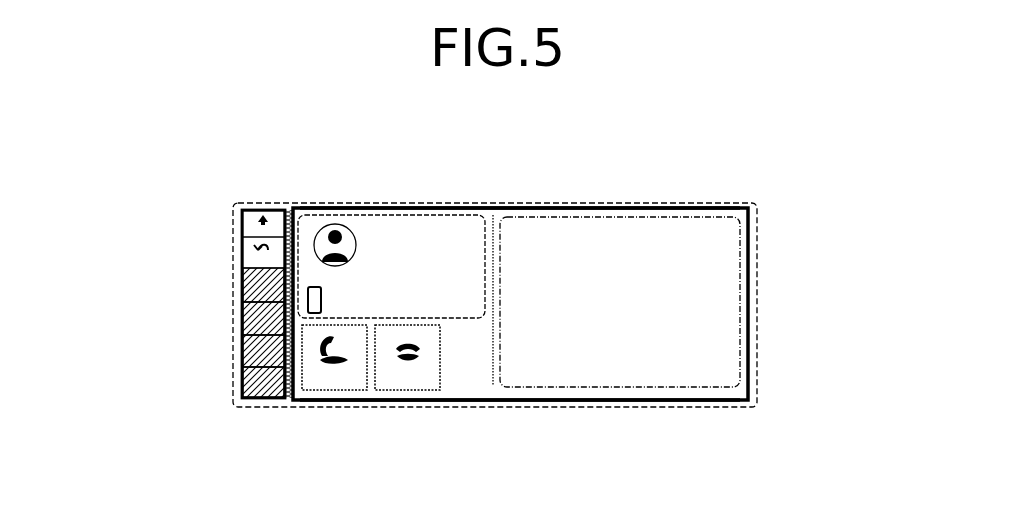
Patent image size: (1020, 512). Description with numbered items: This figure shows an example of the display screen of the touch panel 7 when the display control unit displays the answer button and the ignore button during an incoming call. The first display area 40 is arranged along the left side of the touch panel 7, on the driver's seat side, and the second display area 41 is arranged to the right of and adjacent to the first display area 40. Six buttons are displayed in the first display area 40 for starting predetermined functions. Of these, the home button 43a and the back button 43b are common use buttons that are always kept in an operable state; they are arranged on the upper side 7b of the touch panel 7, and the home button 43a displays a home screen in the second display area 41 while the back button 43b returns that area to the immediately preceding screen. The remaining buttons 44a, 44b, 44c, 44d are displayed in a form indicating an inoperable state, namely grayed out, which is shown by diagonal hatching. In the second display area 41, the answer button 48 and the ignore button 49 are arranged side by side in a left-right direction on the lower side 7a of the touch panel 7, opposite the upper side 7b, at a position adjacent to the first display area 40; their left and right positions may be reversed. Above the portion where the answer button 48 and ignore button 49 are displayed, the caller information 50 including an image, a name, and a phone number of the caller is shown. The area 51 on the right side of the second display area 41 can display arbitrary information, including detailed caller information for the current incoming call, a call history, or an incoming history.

The touch panel 7 is at (612, 184).
The lower side 7a is at (482, 401).
The upper side 7b is at (538, 206).
The first display area 40 is at (226, 260).
The second display area 41 is at (406, 201).
The home button 43a is at (247, 222).
The back button 43b is at (247, 252).
The button 44a is at (245, 280).
The button 44b is at (245, 313).
The button 44c is at (245, 346).
The button 44d is at (245, 378).
The answer button 48 is at (340, 389).
The ignore button 49 is at (410, 389).
The caller information 50 is at (455, 214).
The area 51 is at (683, 236).